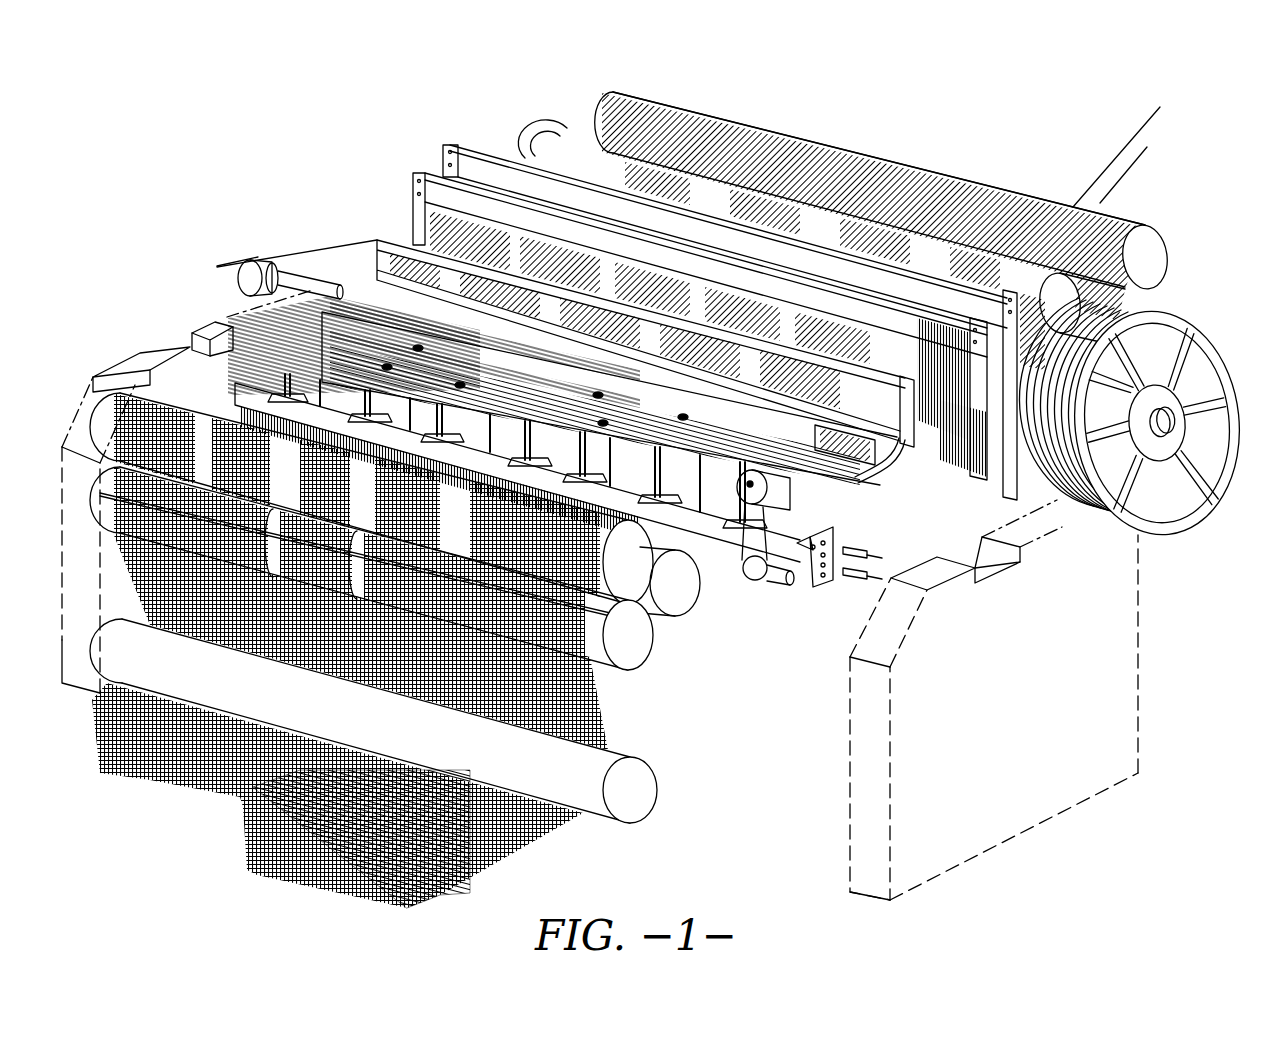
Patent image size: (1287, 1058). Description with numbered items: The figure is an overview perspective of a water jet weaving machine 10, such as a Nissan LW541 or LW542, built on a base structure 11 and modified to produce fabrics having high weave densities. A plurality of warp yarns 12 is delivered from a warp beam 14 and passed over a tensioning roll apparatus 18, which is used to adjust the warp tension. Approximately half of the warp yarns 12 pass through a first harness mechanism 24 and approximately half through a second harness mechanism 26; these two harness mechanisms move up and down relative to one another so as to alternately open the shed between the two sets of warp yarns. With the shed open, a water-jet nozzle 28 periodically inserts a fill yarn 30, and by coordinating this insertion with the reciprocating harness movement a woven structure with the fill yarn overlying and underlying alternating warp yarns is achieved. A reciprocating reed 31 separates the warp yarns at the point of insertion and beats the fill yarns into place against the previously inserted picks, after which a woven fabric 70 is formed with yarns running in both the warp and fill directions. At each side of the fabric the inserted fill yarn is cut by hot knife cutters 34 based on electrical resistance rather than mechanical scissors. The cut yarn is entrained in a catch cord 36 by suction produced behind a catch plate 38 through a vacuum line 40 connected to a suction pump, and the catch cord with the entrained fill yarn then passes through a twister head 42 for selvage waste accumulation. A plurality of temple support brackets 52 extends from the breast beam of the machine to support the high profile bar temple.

The water jet weaving machine 10 is at (1070, 118).
The base structure 11 is at (1138, 667).
The warp yarns 12 is at (1170, 293).
The warp beam 14 is at (1233, 378).
The tensioning roll apparatus 18 is at (1192, 228).
The first harness mechanism 24 is at (472, 145).
The second harness mechanism 26 is at (433, 172).
The water-jet nozzle 28 is at (280, 268).
The fill yarn 30 is at (345, 286).
The reciprocating reed 31 is at (398, 235).
The hot knife cutters 34 is at (808, 413).
The catch cord 36 is at (790, 484).
The catch plate 38 is at (880, 470).
The vacuum line 40 is at (860, 500).
The twister head 42 is at (785, 513).
The temple support brackets 52 is at (247, 350).
The woven fabric 70 is at (617, 727).